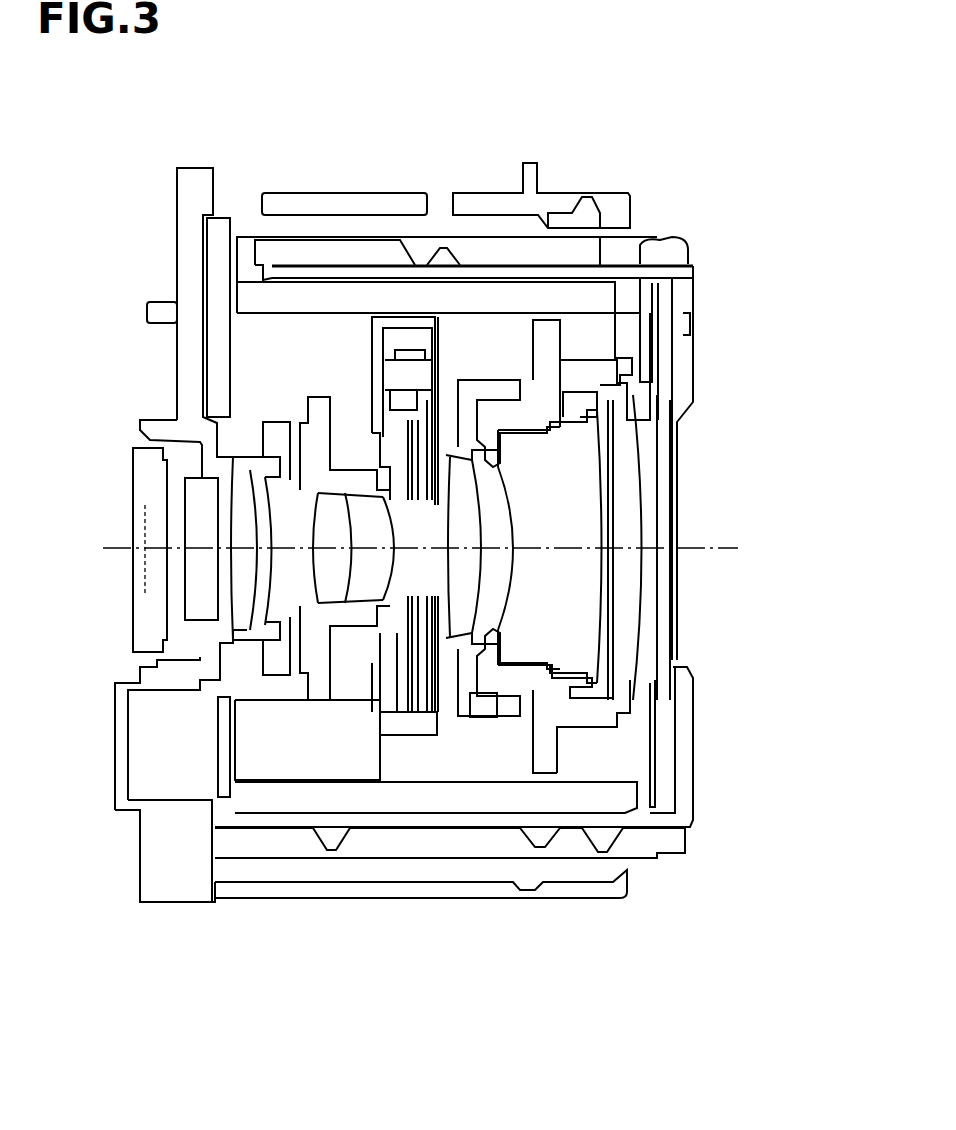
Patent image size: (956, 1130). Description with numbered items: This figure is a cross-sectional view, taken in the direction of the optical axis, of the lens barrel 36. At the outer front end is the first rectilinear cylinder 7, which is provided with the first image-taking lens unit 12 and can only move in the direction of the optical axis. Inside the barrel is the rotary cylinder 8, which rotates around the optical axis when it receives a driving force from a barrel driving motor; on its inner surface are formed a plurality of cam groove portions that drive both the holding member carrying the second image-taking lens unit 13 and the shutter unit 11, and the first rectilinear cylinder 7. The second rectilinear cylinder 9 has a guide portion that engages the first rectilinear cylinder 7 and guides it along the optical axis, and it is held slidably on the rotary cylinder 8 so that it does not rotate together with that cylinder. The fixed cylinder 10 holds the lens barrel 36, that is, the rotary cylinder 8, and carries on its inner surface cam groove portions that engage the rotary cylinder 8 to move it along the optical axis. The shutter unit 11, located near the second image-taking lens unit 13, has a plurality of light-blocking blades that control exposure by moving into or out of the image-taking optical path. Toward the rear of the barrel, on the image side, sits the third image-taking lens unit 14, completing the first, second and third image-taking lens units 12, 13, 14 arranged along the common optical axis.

The lens barrel 36 is at (715, 332).
The third image-taking lens unit 14 is at (270, 610).
The second image-taking lens unit 13 is at (325, 505).
The first image-taking lens unit 12 is at (463, 610).
The shutter unit 11 is at (390, 700).
The fixed cylinder 10 is at (467, 195).
The second rectilinear cylinder 9 is at (531, 290).
The rotary cylinder 8 is at (592, 247).
The first rectilinear cylinder 7 is at (660, 238).